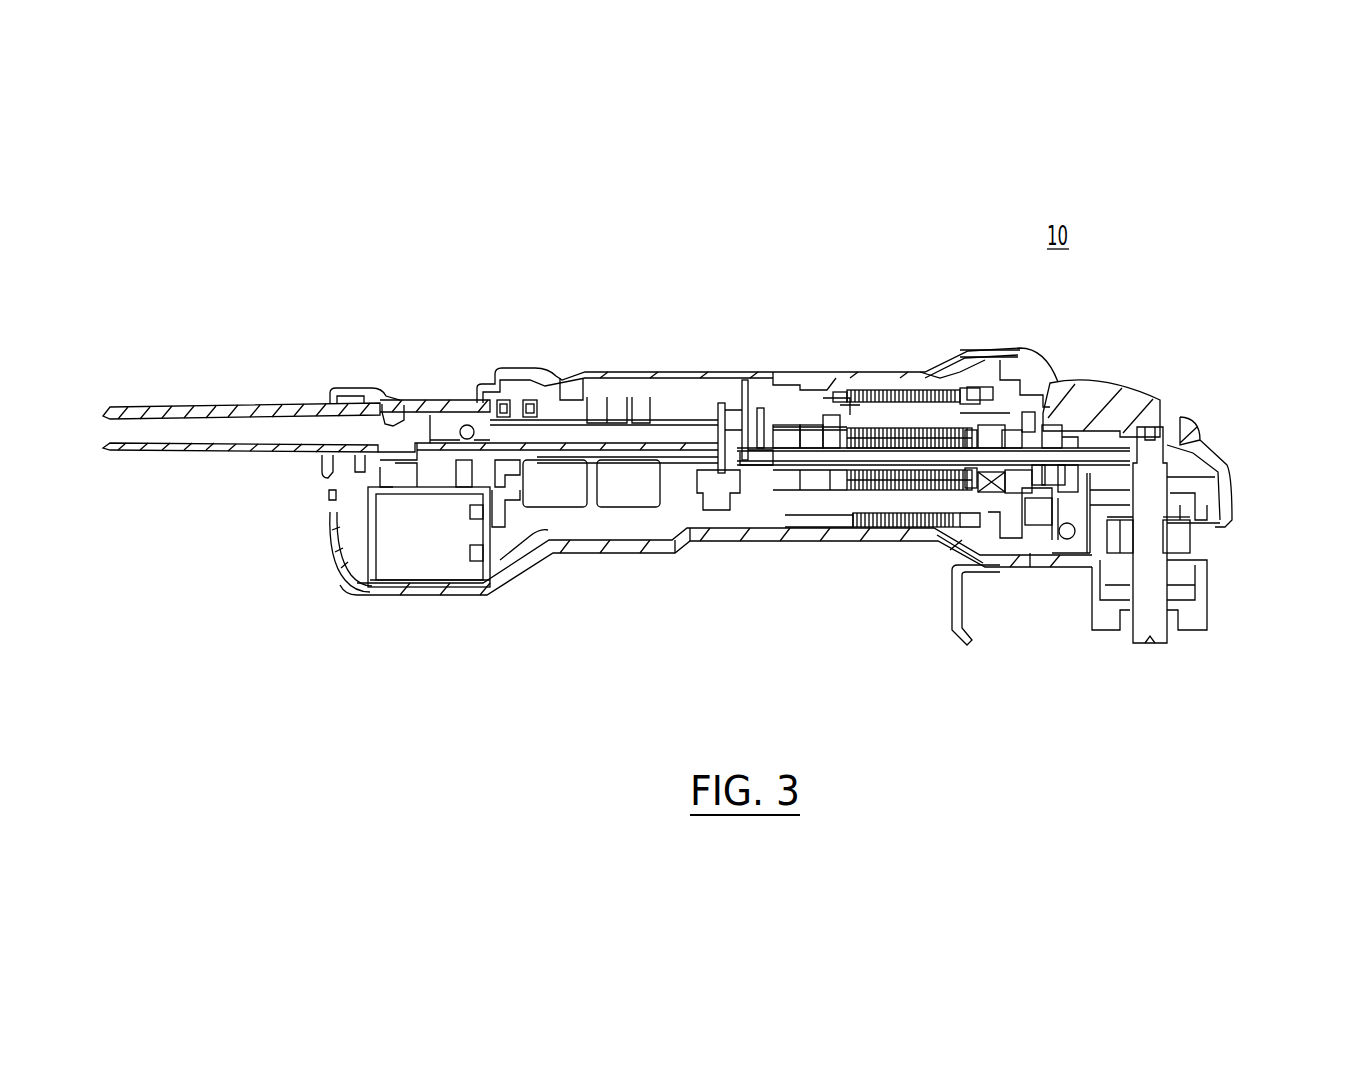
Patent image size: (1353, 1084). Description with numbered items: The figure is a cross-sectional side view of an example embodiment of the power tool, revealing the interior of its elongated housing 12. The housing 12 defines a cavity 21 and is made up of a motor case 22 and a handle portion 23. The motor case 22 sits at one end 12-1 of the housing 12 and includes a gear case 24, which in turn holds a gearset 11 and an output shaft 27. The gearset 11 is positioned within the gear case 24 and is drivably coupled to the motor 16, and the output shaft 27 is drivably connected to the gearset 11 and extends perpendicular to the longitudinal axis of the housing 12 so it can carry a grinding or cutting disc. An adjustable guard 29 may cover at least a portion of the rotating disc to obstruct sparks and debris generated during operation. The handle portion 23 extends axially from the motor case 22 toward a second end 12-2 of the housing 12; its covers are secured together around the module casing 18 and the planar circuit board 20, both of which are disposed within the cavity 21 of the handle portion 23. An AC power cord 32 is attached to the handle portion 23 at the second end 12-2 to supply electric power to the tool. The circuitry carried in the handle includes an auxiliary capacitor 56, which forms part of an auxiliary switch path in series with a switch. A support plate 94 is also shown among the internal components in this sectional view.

The gearset 11 is at (1188, 482).
The elongated housing 12 is at (724, 262).
The one end of the housing 12-1 is at (1228, 442).
The second end of the housing 12-2 is at (305, 514).
The motor 16 is at (859, 540).
The module casing 18 is at (465, 407).
The planar circuit board 20 is at (703, 417).
The cavity 21 is at (552, 528).
The motor case 22 is at (883, 350).
The handle portion 23 is at (664, 572).
The gear case 24 is at (1134, 385).
The output shaft 27 is at (1157, 568).
The adjustable guard 29 is at (965, 618).
The AC power cord 32 is at (190, 452).
The auxiliary capacitor 56 is at (400, 572).
The support plate 94 is at (745, 408).